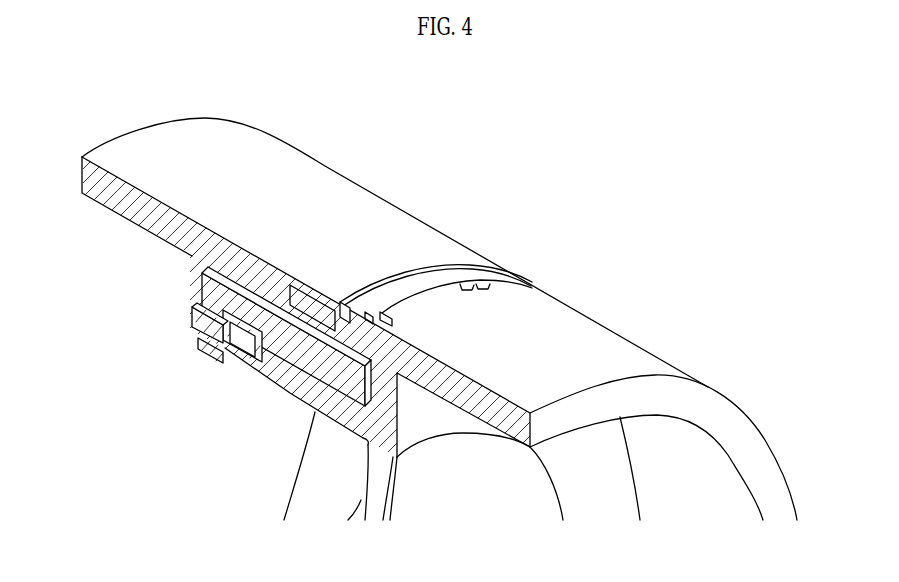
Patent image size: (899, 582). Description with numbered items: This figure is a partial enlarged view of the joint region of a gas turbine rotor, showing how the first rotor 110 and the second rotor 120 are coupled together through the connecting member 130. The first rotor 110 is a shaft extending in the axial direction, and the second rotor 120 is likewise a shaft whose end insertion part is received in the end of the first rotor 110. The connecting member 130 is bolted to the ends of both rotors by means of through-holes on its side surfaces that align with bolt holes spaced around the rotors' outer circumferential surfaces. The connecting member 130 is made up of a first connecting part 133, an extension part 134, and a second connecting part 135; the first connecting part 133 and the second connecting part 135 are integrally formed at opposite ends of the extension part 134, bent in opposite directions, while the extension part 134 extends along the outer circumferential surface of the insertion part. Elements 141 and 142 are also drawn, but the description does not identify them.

The first rotor 110 is at (370, 172).
The second rotor 120 is at (633, 327).
The connecting member 130 is at (502, 276).
The first connecting part 133 is at (343, 342).
The extension part 134 is at (292, 358).
The second connecting part 135 is at (193, 307).
The hook portion 141 is at (370, 317).
The locking groove 142 is at (197, 339).